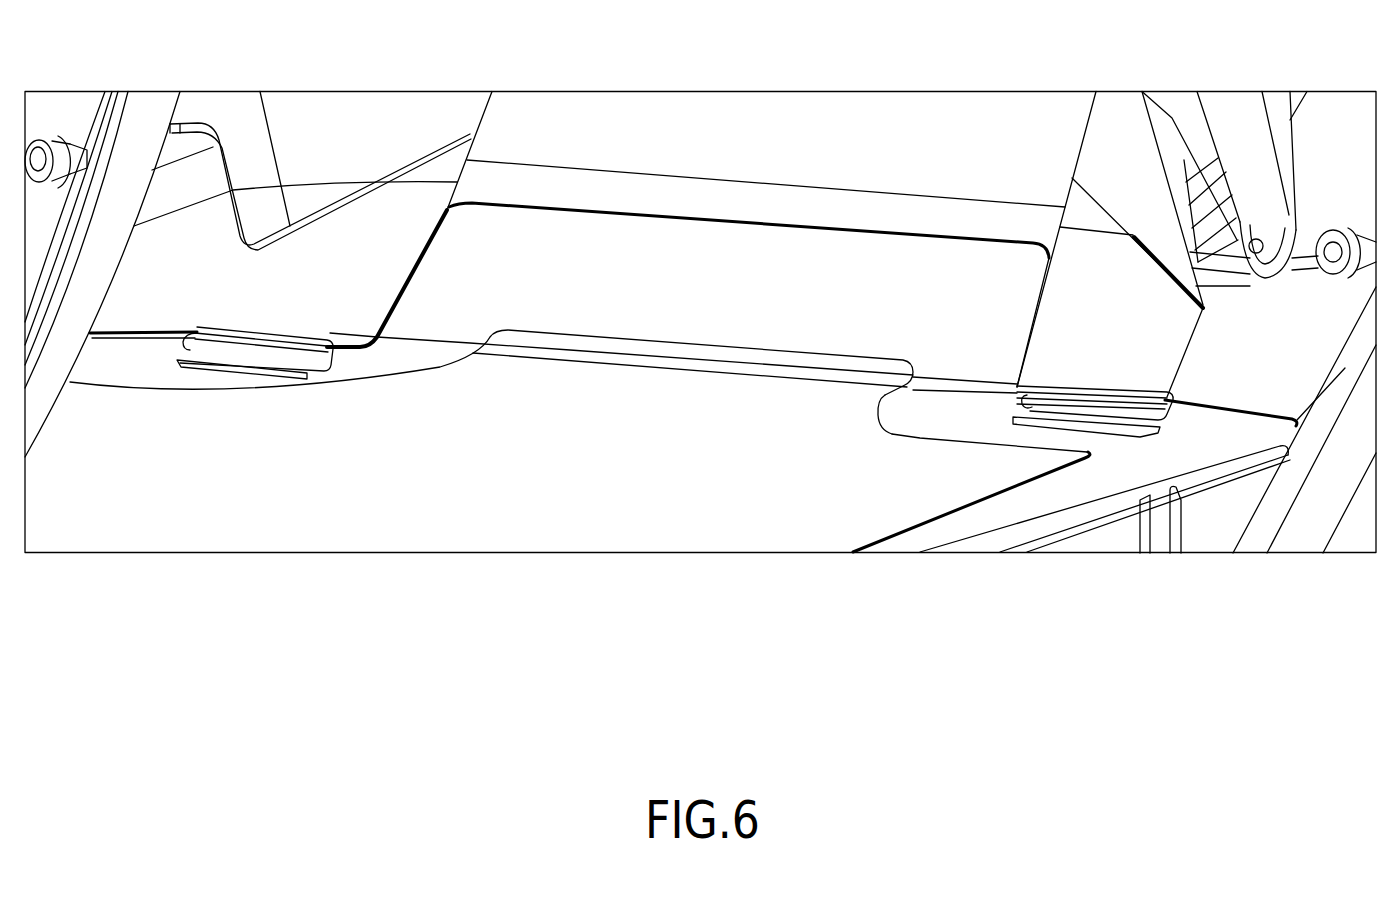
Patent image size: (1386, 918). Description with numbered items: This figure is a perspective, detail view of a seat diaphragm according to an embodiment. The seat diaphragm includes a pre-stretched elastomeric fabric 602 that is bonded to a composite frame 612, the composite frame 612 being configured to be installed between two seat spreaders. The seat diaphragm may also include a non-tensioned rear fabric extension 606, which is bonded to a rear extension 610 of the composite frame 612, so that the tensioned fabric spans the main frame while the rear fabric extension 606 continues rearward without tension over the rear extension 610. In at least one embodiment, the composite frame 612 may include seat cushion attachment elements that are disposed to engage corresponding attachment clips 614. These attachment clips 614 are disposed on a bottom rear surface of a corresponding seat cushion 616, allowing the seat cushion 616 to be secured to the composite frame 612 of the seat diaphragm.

The pre-stretched elastomeric fabric 602 is at (587, 486).
The non-tensioned rear fabric extension 606 is at (765, 110).
The rear extension 610 is at (903, 257).
The composite frame 612 is at (903, 423).
The attachment clips 614 is at (257, 355).
The seat cushion 616 is at (337, 108).